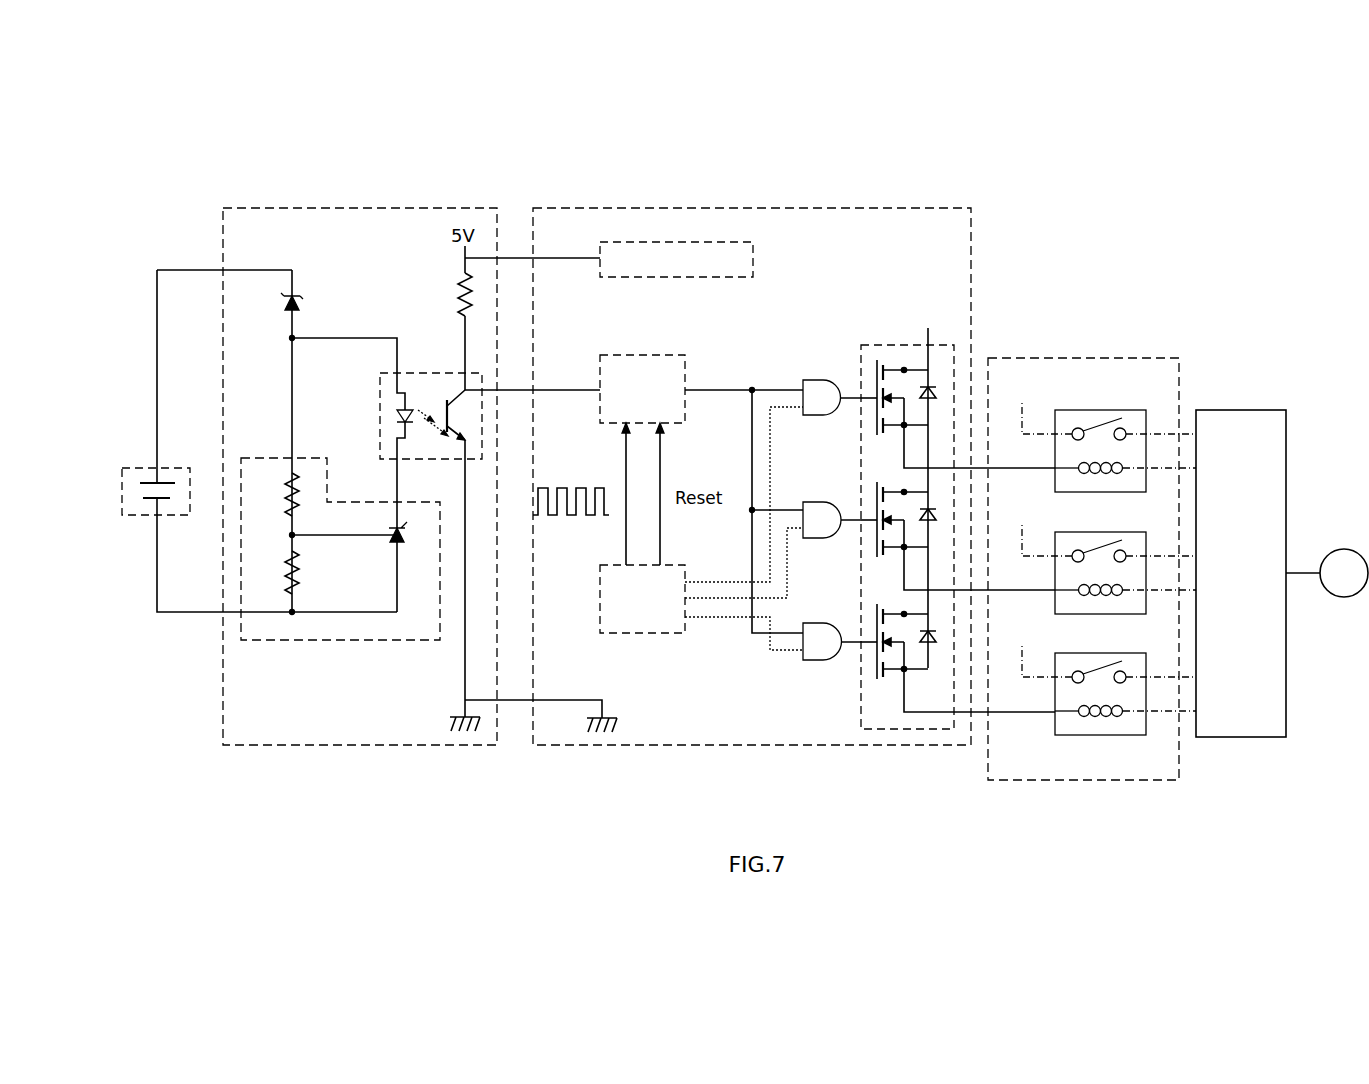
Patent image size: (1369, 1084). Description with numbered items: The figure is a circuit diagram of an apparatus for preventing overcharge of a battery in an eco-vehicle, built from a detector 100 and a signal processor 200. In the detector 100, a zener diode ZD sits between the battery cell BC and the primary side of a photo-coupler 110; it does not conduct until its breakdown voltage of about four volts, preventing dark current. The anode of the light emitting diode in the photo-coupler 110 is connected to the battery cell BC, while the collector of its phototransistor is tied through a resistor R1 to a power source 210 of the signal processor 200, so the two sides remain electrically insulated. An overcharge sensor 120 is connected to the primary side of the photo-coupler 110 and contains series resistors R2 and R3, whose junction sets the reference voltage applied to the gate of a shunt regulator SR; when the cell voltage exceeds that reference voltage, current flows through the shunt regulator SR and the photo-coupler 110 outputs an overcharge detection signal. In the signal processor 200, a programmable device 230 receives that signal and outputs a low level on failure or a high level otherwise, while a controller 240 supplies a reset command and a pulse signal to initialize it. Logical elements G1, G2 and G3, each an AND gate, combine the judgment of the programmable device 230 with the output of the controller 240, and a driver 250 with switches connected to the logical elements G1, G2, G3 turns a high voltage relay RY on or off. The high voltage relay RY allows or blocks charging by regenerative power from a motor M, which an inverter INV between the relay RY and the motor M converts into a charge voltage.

The detector 100 is at (370, 208).
The photo-coupler 110 is at (380, 412).
The overcharge sensor 120 is at (340, 580).
The signal processor 200 is at (786, 208).
The power source 210 is at (645, 242).
The programmable device 230 is at (645, 355).
The controller 240 is at (644, 633).
The driver 250 is at (908, 729).
The battery cell BC is at (122, 490).
The high voltage relay RY is at (1082, 358).
The zener diode ZD is at (305, 303).
The shunt regulator SR is at (410, 534).
The resistor R1 is at (448, 294).
The resistor R2 is at (277, 494).
The resistor R3 is at (277, 572).
The logical element G1 is at (822, 397).
The logical element G2 is at (822, 520).
The logical element G3 is at (822, 641).
The inverter INV is at (1241, 573).
The motor M is at (1344, 573).